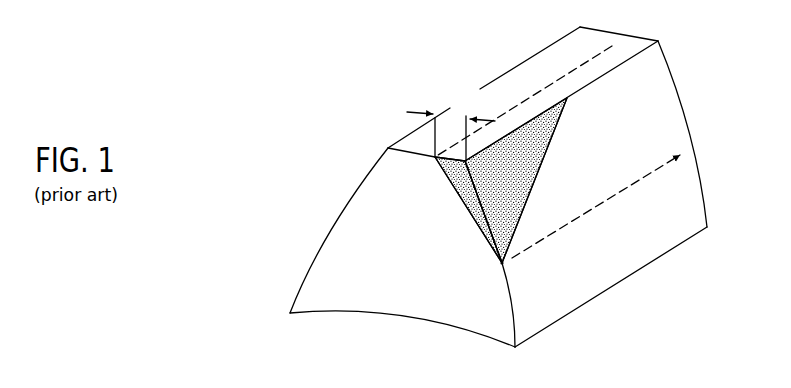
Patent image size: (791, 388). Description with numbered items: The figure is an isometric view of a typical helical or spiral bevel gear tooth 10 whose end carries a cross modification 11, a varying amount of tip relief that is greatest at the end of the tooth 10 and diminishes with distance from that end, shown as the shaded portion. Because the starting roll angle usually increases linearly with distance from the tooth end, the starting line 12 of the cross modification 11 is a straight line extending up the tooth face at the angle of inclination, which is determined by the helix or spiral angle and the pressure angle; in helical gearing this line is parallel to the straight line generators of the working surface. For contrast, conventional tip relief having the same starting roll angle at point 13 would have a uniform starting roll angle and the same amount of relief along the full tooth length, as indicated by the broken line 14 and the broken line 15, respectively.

The tooth 10 is at (680, 92).
The cross modification 11 is at (453, 189).
The starting line 12 is at (543, 163).
The point 13 is at (498, 264).
The broken line 14 is at (680, 155).
The broken line 15 is at (612, 46).